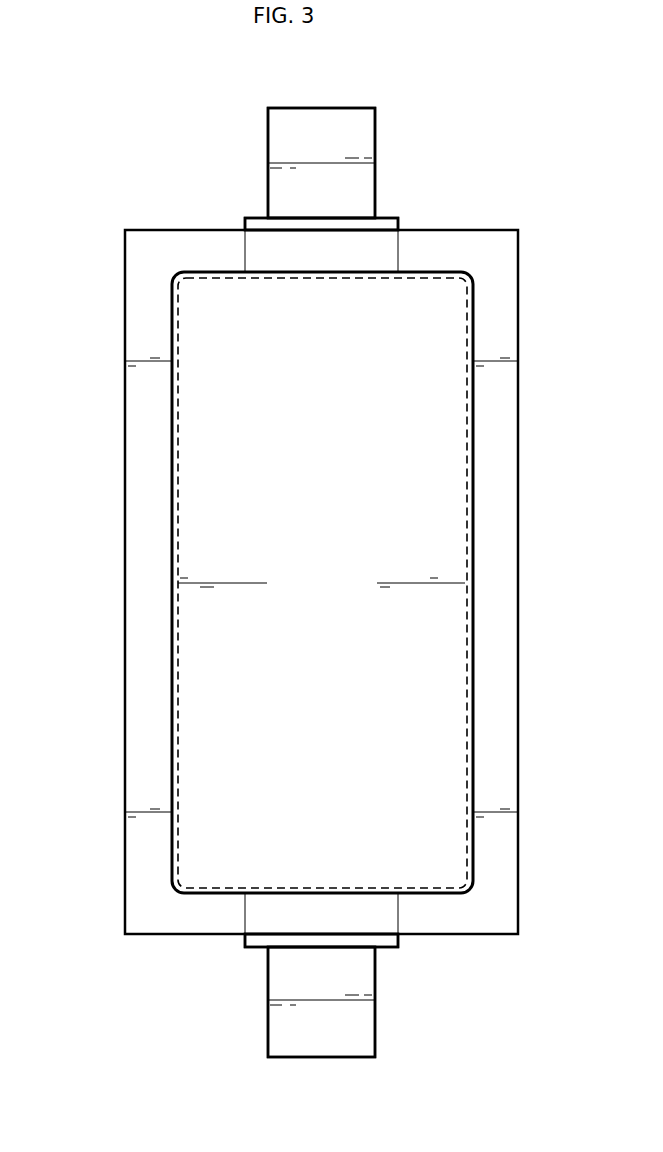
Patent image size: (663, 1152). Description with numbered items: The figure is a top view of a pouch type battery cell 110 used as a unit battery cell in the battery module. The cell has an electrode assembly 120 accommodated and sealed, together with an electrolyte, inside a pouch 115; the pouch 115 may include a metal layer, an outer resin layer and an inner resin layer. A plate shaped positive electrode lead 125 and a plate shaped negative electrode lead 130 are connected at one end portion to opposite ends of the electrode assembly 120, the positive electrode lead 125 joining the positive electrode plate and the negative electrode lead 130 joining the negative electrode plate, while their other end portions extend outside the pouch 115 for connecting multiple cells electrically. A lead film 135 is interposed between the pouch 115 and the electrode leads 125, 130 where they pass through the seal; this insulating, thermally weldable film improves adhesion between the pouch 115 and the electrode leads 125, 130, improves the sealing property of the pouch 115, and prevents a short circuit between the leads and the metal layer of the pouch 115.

The pouch type battery cell 110 is at (88, 178).
The pouch 115 is at (137, 602).
The electrode assembly 120 is at (192, 667).
The positive electrode lead 125 is at (288, 112).
The negative electrode lead 130 is at (288, 1050).
The lead film 135 is at (257, 220).